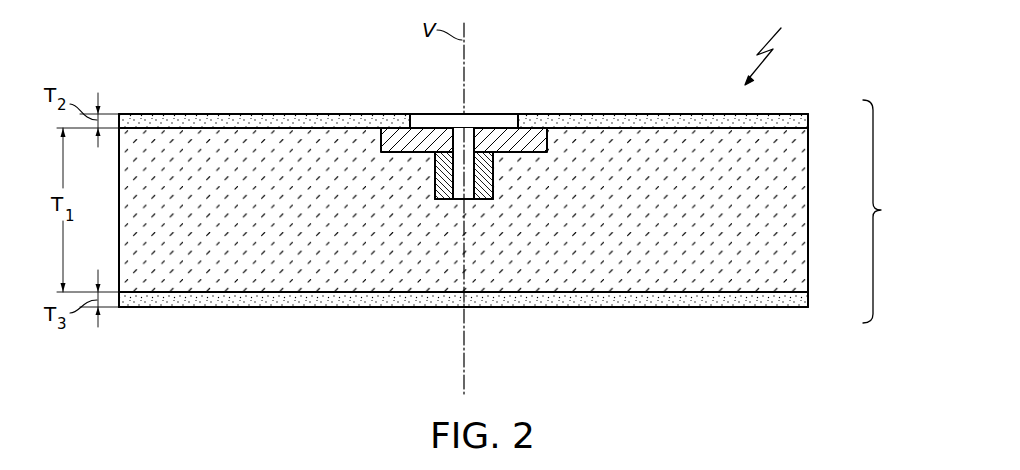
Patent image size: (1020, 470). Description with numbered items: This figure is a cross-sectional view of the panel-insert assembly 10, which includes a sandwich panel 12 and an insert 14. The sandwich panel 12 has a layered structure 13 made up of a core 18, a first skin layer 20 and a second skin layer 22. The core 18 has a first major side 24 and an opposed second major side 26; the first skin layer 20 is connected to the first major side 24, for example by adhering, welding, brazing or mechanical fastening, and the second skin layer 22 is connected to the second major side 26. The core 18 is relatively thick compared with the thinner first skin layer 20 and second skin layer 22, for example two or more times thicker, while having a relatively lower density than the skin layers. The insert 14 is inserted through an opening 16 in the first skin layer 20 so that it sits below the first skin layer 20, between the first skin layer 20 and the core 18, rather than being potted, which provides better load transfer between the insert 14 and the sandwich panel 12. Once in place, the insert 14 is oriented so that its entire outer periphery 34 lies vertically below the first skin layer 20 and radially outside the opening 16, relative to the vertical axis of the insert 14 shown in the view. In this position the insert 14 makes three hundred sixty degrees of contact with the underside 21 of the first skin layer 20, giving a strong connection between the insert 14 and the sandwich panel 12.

The panel-insert assembly 10 is at (775, 44).
The sandwich panel 12 is at (491, 205).
The layered structure 13 is at (891, 211).
The insert 14 is at (493, 178).
The opening 16 is at (517, 120).
The core 18 is at (810, 205).
The first skin layer 20 is at (810, 121).
The underside 21 is at (790, 129).
The second skin layer 22 is at (810, 299).
The first major side 24 is at (630, 128).
The second major side 26 is at (645, 300).
The outer periphery 34 is at (547, 143).